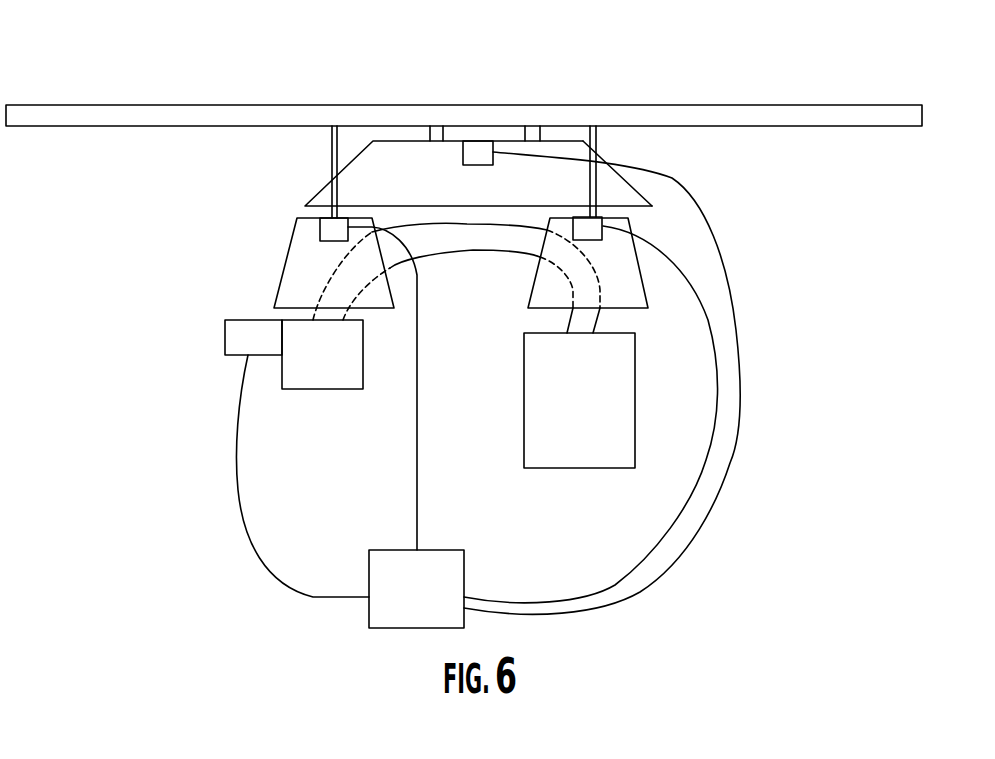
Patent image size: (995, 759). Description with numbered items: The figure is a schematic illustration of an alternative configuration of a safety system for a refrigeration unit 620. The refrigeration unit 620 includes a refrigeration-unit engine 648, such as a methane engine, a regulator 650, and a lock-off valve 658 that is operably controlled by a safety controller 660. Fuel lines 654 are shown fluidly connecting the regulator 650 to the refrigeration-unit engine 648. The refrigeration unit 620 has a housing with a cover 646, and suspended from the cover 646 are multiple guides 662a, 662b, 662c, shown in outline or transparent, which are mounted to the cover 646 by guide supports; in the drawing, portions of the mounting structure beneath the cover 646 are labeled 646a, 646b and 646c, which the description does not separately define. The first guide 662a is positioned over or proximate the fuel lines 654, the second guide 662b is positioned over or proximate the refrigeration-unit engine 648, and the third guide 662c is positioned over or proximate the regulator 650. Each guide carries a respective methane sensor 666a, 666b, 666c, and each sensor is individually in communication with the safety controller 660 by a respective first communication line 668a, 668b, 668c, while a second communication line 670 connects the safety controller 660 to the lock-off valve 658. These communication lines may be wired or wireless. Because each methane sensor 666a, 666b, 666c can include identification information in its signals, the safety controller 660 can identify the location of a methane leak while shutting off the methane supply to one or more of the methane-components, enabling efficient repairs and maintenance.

The refrigeration unit 620 is at (243, 54).
The cover 646 is at (521, 122).
The bracket tabs 646a is at (437, 132).
The bracket support post 646b is at (597, 136).
The bracket support post 646c is at (333, 127).
The refrigeration-unit engine 648 is at (618, 418).
The regulator 650 is at (327, 378).
The fuel lines 654 is at (482, 238).
The lock-off valve 658 is at (246, 328).
The safety controller 660 is at (442, 575).
The first guide 662a is at (618, 193).
The second guide 662b is at (622, 287).
The third guide 662c is at (298, 258).
The methane sensor 666a is at (470, 150).
The methane sensor 666b is at (600, 226).
The methane sensor 666c is at (332, 226).
The first communication line 668a is at (732, 463).
The first communication line 668b is at (655, 552).
The first communication line 668c is at (420, 415).
The second communication line 670 is at (235, 455).